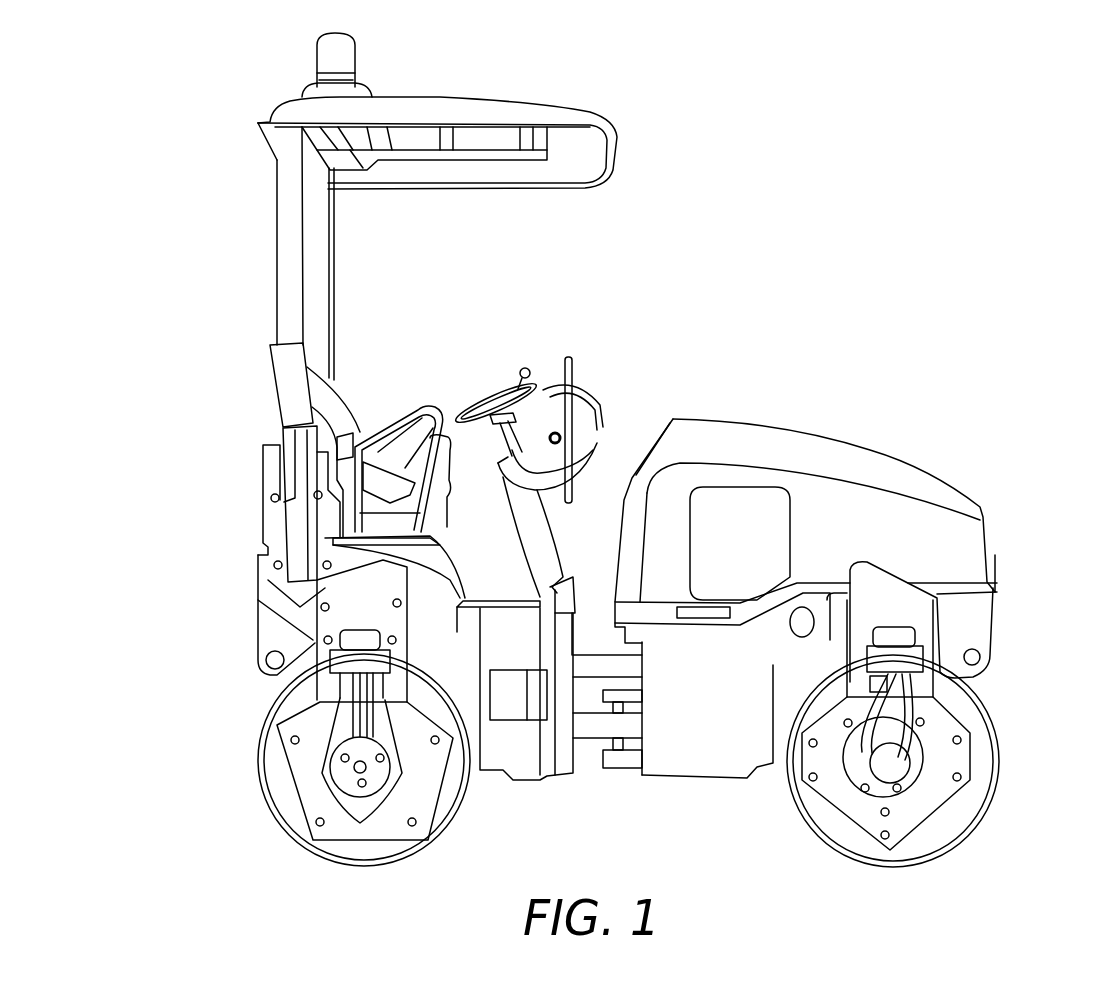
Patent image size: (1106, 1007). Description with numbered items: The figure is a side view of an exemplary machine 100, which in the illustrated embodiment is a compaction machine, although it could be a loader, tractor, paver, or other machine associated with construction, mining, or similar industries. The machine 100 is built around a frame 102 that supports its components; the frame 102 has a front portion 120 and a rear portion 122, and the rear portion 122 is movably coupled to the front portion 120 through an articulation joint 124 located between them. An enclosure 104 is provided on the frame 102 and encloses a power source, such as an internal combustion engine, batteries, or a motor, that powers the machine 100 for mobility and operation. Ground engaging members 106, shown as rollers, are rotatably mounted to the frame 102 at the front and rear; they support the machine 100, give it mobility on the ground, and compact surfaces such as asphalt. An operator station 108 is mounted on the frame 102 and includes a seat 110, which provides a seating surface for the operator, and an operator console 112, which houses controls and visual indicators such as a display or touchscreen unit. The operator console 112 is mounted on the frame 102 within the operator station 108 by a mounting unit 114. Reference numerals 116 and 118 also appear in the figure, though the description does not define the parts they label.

The machine 100 is at (983, 145).
The frame 102 is at (525, 757).
The enclosure 104 is at (877, 467).
The ground engaging members 106 is at (278, 793).
The operator station 108 is at (470, 376).
The seat 110 is at (340, 410).
The operator console 112 is at (593, 375).
The mounting unit 114 is at (567, 523).
The steering wheel 116 is at (497, 390).
The propel lever 118 is at (543, 377).
The front portion 120 is at (1002, 588).
The rear portion 122 is at (257, 574).
The articulation joint 124 is at (603, 773).